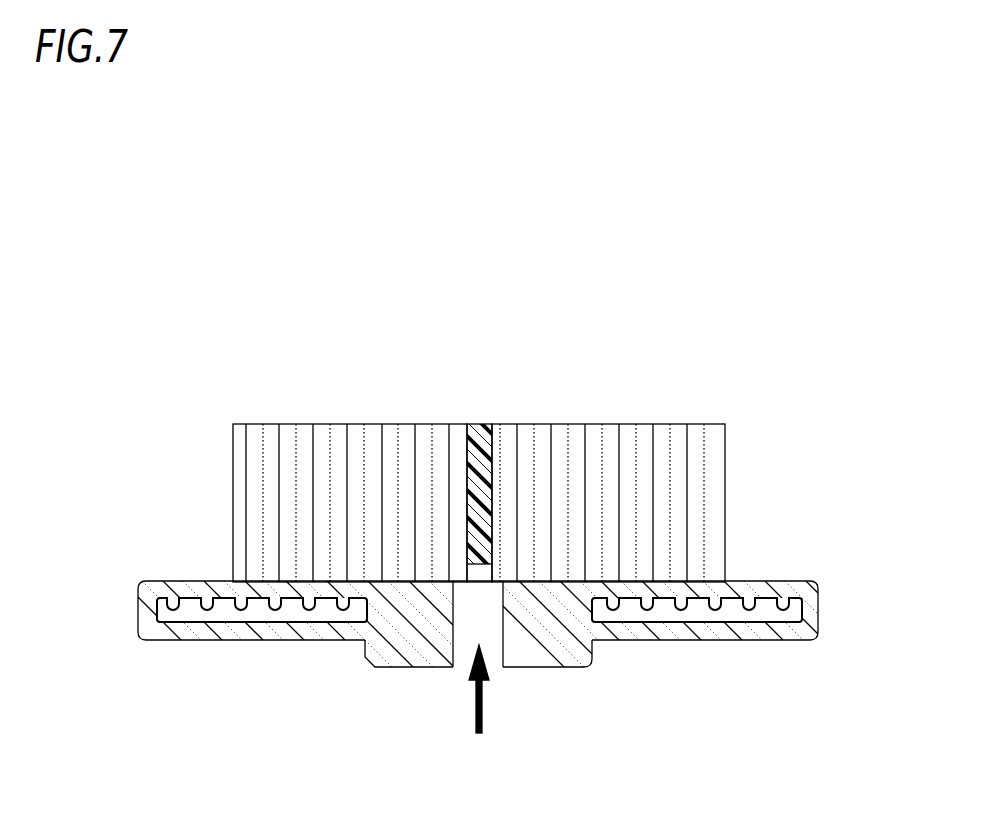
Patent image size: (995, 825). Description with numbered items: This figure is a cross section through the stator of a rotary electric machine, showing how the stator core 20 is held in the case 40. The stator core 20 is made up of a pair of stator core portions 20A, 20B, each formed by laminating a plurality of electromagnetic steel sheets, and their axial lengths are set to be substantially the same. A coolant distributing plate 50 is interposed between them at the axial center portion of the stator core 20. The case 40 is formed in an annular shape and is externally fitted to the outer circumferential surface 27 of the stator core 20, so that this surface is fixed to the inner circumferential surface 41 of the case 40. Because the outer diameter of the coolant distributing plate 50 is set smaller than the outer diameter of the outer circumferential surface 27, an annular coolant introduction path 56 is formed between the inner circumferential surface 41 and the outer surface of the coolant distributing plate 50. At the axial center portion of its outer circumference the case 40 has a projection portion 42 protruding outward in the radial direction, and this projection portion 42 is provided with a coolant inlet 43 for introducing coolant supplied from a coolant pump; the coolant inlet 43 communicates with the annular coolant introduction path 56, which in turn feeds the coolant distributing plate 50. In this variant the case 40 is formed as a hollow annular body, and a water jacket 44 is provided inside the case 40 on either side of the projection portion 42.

The stator core 20 is at (652, 305).
The stator core portion 20A is at (354, 424).
The stator core portion 20B is at (628, 424).
The outer circumferential surface 27 is at (672, 582).
The coolant distributing plate 50 is at (480, 420).
The case 40 is at (284, 652).
The inner circumferential surface 41 is at (766, 582).
The projection portion 42 is at (408, 648).
The coolant inlet 43 is at (467, 618).
The water jacket 44 is at (192, 610).
The annular coolant introduction path 56 is at (538, 668).